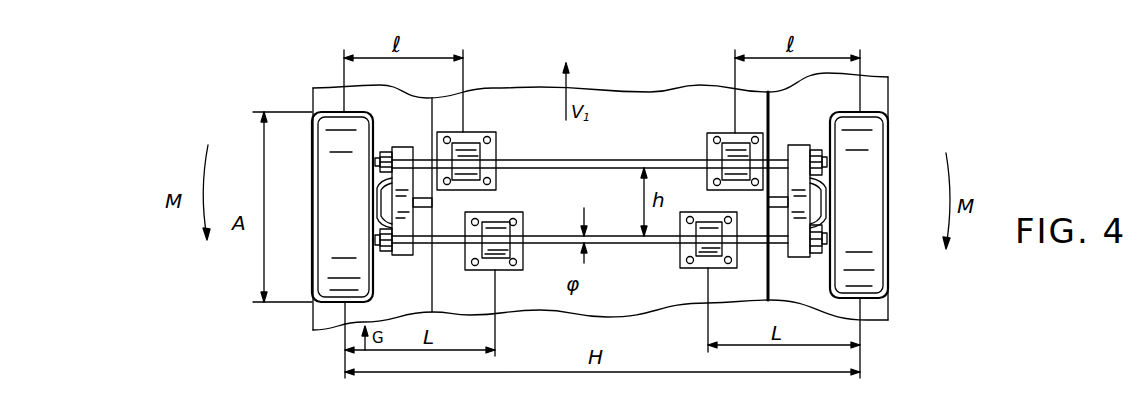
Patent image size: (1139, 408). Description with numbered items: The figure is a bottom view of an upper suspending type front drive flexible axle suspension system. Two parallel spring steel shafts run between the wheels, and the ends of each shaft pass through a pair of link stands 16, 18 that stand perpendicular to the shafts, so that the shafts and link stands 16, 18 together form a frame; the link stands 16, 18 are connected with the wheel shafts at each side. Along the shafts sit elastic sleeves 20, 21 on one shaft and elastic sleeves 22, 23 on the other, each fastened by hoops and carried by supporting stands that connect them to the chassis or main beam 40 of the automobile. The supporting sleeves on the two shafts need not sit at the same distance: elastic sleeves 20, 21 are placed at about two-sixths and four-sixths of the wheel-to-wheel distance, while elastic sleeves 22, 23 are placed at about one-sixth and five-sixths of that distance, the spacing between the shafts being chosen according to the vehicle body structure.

The link stand 16 is at (400, 240).
The link stand 18 is at (803, 225).
The elastic sleeve 20 is at (497, 268).
The elastic sleeve 21 is at (700, 260).
The elastic sleeve 22 is at (475, 140).
The elastic sleeve 23 is at (730, 140).
The main beam 40 is at (646, 146).